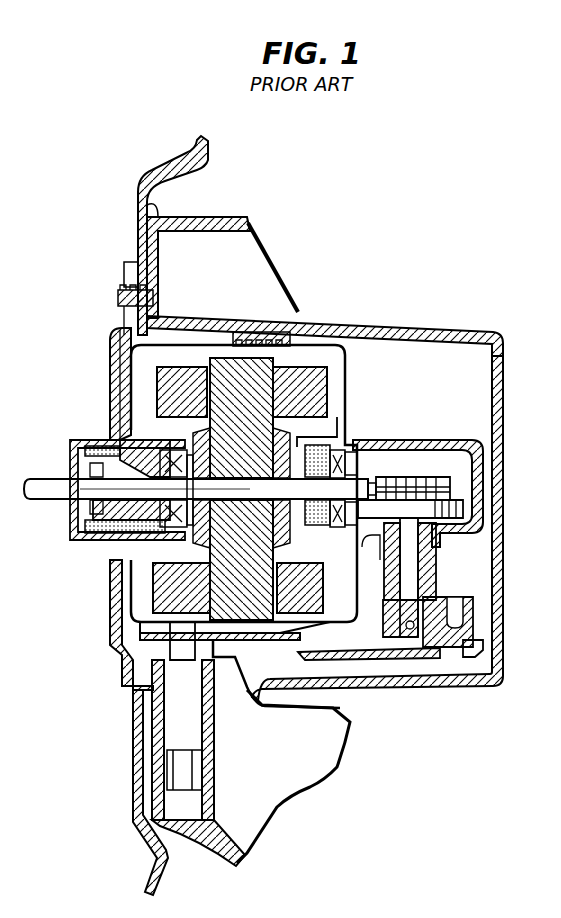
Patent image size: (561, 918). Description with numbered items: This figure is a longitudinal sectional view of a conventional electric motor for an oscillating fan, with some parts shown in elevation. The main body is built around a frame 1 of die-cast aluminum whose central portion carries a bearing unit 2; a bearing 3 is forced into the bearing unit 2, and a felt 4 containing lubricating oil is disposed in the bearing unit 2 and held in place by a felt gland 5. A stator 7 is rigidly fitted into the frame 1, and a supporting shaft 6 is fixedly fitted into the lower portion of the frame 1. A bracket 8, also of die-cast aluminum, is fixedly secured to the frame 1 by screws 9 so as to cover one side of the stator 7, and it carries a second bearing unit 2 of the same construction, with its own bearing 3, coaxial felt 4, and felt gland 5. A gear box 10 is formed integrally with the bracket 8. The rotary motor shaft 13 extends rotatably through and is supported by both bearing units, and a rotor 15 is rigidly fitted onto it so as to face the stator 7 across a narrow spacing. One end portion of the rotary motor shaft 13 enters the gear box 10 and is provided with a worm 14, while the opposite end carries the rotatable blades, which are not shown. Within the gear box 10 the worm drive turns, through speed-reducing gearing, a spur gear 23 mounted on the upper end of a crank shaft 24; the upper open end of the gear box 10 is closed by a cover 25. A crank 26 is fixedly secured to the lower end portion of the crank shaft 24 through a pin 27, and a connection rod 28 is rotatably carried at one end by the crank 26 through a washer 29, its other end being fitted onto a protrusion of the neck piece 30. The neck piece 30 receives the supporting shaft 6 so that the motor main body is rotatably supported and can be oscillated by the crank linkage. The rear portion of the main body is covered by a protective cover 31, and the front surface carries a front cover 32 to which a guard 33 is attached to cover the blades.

The frame 1 is at (127, 358).
The bearing unit 2 is at (122, 437).
The bearing 3 is at (167, 448).
The felt 4 is at (88, 534).
The felt gland 5 is at (74, 525).
The supporting shaft 6 is at (177, 710).
The stator 7 is at (220, 375).
The bracket 8 is at (340, 357).
The screws 9 is at (300, 322).
The gear box 10 is at (478, 508).
The rotary motor shaft 13 is at (50, 480).
The worm 14 is at (452, 486).
The rotor 15 is at (193, 553).
The spur gear 23 is at (438, 522).
The crank shaft 24 is at (410, 571).
The cover 25 is at (472, 442).
The crank 26 is at (473, 627).
The pin 27 is at (396, 625).
The connection rod 28 is at (405, 662).
The washer 29 is at (470, 660).
The neck piece 30 is at (303, 768).
The protective cover 31 is at (494, 335).
The front cover 32 is at (110, 380).
The guard 33 is at (209, 148).